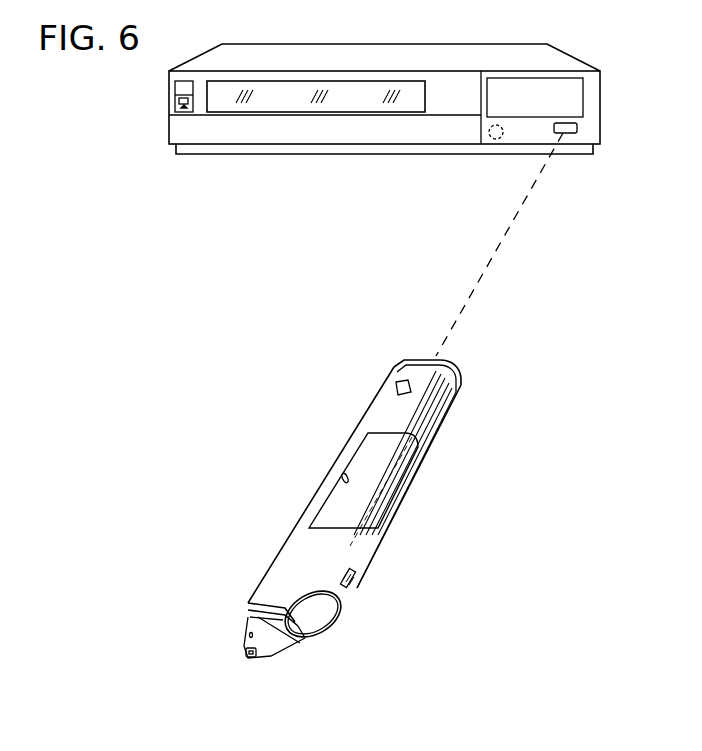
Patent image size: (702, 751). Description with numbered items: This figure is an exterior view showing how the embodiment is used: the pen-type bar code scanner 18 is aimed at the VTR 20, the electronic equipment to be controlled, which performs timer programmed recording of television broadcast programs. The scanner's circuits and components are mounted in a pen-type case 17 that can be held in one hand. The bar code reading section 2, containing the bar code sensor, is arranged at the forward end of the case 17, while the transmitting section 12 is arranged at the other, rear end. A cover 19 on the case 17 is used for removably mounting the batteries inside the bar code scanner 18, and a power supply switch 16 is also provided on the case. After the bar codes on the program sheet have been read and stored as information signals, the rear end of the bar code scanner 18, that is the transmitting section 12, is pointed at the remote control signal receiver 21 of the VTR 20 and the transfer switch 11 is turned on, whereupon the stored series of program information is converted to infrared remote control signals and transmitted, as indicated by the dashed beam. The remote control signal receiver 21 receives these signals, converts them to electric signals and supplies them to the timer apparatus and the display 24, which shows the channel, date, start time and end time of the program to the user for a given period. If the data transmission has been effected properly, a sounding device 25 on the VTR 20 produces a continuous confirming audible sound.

The VTR 20 is at (300, 128).
The display 24 is at (575, 80).
The remote control signal receiver 21 is at (577, 127).
The sounding device 25 is at (494, 143).
The pen-type case 17 is at (292, 563).
The transmitting section 12 is at (448, 366).
The cover 19 is at (384, 482).
The bar code scanner 18 is at (318, 474).
The transfer switch 11 is at (393, 387).
The power supply switch 16 is at (356, 576).
The bar code reading section 2 is at (251, 657).